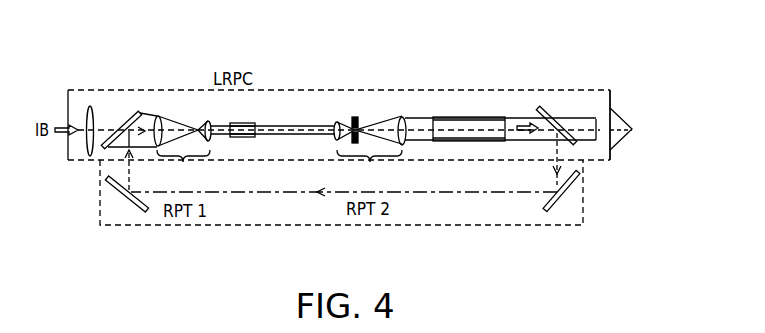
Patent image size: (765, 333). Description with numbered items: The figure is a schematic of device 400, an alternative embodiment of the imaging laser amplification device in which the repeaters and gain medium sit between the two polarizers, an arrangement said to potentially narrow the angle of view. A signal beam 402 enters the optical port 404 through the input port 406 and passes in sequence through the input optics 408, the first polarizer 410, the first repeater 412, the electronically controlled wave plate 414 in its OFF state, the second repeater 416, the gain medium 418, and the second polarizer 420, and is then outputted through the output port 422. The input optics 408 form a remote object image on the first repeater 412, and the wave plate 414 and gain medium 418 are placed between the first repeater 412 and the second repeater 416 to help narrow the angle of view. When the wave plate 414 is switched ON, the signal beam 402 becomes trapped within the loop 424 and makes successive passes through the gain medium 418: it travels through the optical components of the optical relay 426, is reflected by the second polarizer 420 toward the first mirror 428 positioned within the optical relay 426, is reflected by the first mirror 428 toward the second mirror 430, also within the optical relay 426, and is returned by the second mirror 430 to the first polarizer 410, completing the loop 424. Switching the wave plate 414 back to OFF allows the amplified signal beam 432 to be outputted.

The device 400 is at (90, 74).
The signal beam 402 is at (62, 136).
The optical port 404 is at (63, 127).
The input port 406 is at (609, 90).
The input optics 408 is at (91, 158).
The first polarizer 410 is at (134, 112).
The first repeater 412 is at (182, 154).
The electronically controlled wave plate 414 is at (237, 117).
The second repeater 416 is at (369, 143).
The gain medium 418 is at (475, 118).
The second polarizer 420 is at (568, 112).
The output port 422 is at (618, 142).
The loop 424 is at (470, 193).
The optical relay 426 is at (237, 208).
The first mirror 428 is at (573, 188).
The second mirror 430 is at (138, 212).
The amplified signal beam 432 is at (657, 128).